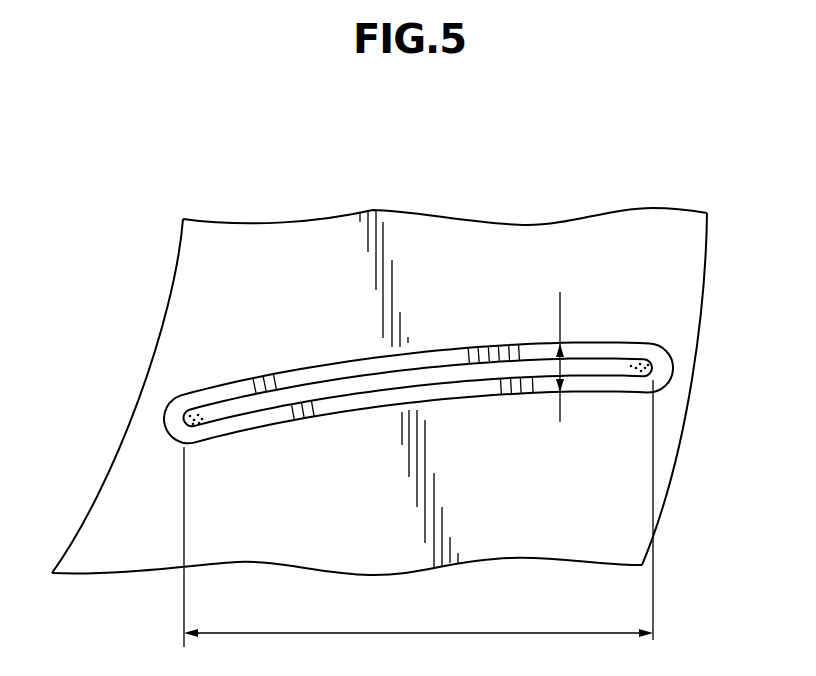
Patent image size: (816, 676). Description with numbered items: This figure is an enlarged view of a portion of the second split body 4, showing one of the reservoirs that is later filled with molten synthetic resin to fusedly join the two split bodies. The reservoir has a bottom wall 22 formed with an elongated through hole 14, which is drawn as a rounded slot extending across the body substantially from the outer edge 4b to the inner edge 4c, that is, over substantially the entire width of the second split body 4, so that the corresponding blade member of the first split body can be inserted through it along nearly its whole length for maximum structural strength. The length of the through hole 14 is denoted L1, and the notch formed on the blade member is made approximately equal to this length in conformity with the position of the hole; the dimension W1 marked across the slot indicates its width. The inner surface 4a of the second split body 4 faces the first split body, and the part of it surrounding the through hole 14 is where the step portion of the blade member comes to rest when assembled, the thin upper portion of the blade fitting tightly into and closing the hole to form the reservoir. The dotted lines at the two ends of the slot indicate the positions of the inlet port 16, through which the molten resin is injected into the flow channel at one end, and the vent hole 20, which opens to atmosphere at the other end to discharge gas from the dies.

The second split body 4 is at (488, 205).
The inner surface 4a is at (213, 300).
The outer edge 4b is at (707, 290).
The inner edge 4c is at (125, 447).
The through hole 14 is at (330, 388).
The inlet port 16 is at (206, 412).
The vent hole 20 is at (630, 364).
The bottom wall 22 is at (452, 390).
The groove width W1 is at (560, 318).
The length of the through hole L1 is at (418, 513).